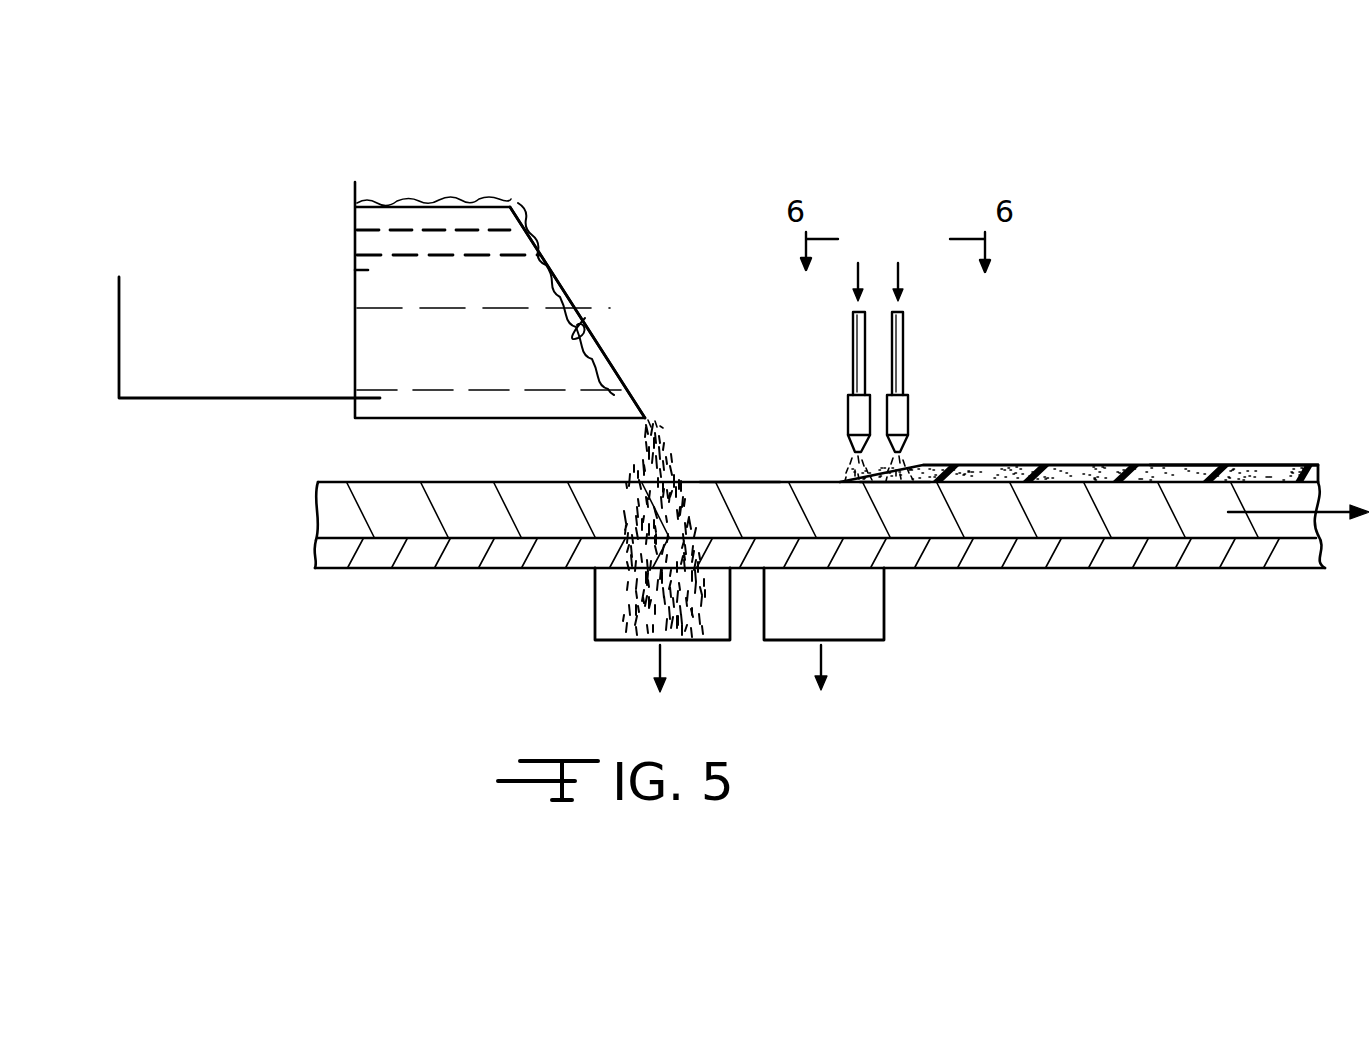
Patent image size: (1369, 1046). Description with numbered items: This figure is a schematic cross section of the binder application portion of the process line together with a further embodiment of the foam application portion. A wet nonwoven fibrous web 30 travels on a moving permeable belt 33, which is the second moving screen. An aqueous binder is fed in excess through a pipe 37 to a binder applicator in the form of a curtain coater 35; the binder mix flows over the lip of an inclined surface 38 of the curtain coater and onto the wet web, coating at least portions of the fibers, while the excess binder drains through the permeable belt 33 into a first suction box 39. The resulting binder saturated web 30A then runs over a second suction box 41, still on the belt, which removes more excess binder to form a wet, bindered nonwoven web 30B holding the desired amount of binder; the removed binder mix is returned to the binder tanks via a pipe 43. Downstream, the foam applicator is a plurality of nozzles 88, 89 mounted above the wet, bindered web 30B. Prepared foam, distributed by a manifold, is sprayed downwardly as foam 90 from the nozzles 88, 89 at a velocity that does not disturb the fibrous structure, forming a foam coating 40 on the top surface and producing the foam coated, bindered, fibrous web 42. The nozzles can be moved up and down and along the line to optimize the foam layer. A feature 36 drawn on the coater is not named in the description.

The wet nonwoven fibrous web 30 is at (370, 495).
The binder saturated web 30A is at (738, 500).
The wet, bindered nonwoven web 30B is at (890, 500).
The permeable belt 33 is at (368, 569).
The curtain coater 35 is at (355, 268).
The sloped hopper wall 36 is at (561, 258).
The pipe 37 is at (119, 322).
The inclined surface 38 is at (585, 318).
The first suction box 39 is at (610, 619).
The foam coating 40 is at (1085, 470).
The second suction box 41 is at (790, 622).
The foam coated, bindered, fibrous web 42 is at (1180, 470).
The pipe 43 is at (650, 659).
The nozzle 88 is at (850, 420).
The nozzle 89 is at (895, 413).
The foam 90 is at (905, 458).